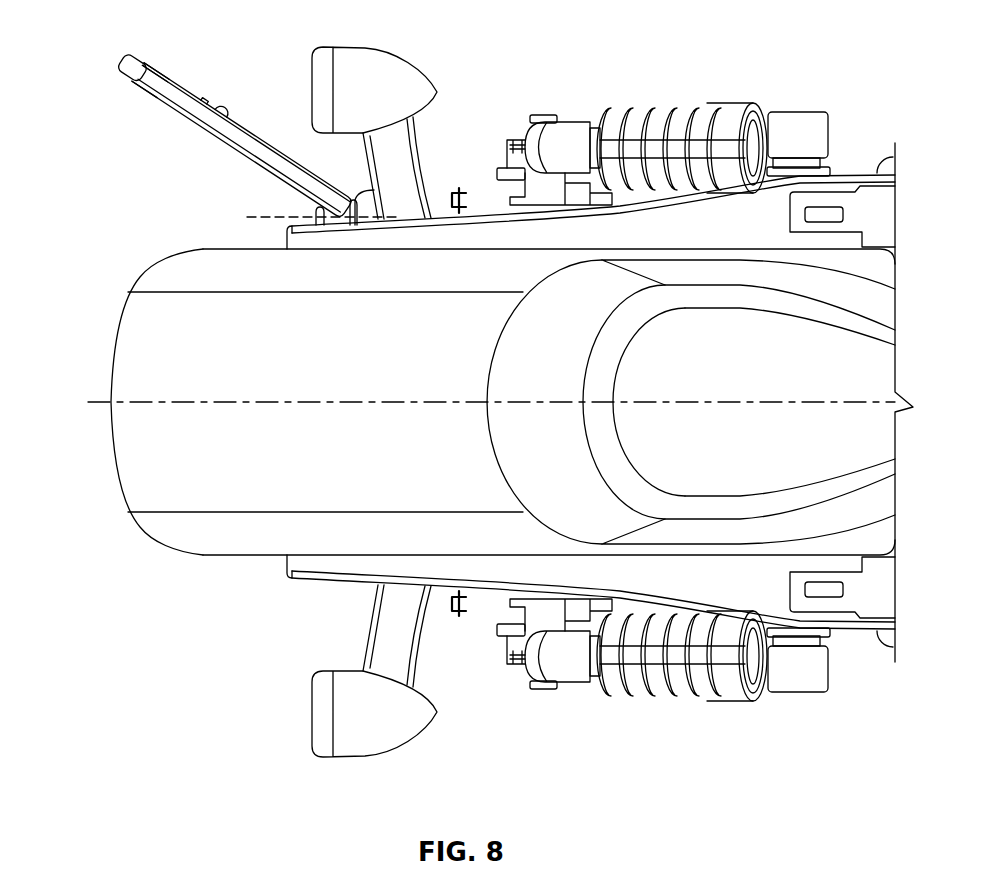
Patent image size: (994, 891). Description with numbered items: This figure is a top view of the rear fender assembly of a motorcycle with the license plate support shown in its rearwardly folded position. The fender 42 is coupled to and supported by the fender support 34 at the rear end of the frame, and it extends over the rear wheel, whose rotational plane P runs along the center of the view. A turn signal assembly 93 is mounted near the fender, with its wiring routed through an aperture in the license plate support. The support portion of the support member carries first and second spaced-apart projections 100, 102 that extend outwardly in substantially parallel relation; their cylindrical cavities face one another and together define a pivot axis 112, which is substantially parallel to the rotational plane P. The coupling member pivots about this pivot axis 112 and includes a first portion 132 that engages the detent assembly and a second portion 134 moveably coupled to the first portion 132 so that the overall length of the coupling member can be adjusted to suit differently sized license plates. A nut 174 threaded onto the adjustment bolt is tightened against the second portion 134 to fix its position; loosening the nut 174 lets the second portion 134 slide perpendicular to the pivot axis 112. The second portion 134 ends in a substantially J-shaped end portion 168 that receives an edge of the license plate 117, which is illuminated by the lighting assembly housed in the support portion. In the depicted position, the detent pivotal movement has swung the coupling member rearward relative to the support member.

The fender support 34 is at (430, 233).
The fender 42 is at (130, 333).
The turn signal assembly 93 is at (407, 73).
The first projection 100 is at (363, 210).
The second projection 102 is at (315, 210).
The pivot axis 112 is at (262, 218).
The license plate 117 is at (215, 125).
The first portion 132 is at (253, 132).
The second portion 134 is at (158, 67).
The J-shaped end portion 168 is at (124, 70).
The nut 174 is at (230, 102).
The rotational plane P is at (245, 402).